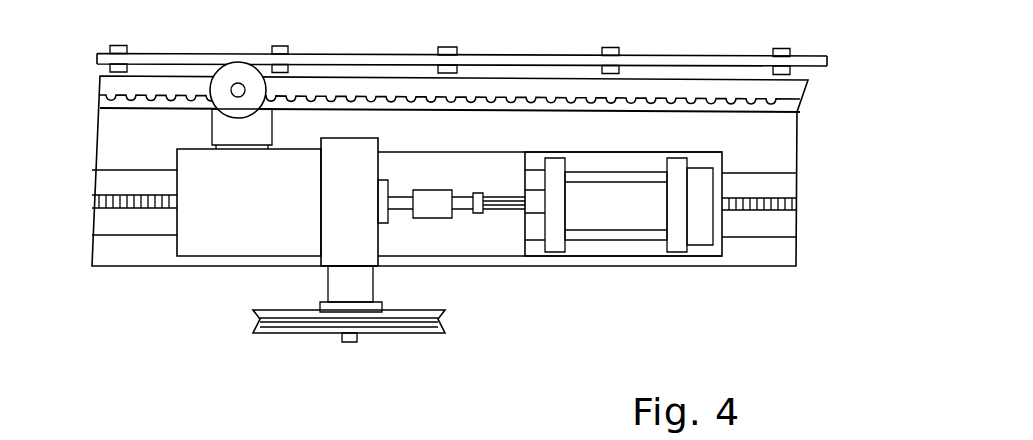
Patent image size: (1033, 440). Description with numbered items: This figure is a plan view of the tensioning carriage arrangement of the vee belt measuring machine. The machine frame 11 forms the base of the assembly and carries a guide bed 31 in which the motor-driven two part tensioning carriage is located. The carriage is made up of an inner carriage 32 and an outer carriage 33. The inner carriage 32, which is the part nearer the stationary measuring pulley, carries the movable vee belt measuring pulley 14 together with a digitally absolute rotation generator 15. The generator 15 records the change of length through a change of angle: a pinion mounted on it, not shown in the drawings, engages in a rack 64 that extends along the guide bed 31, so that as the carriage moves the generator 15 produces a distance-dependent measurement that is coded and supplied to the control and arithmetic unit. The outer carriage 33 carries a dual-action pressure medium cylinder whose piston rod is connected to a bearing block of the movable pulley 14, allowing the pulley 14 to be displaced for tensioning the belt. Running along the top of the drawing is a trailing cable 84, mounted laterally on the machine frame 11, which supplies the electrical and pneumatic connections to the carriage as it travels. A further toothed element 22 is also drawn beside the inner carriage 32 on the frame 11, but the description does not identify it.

The machine frame 11 is at (750, 266).
The movable vee belt measuring pulley 14 is at (257, 320).
The digitally absolute rotation generator 15 is at (226, 76).
The rack 22 is at (125, 208).
The guide bed 31 is at (783, 224).
The inner carriage 32 is at (458, 247).
The outer carriage 33 is at (613, 247).
The rack 64 is at (695, 103).
The trailing cable 84 is at (530, 60).